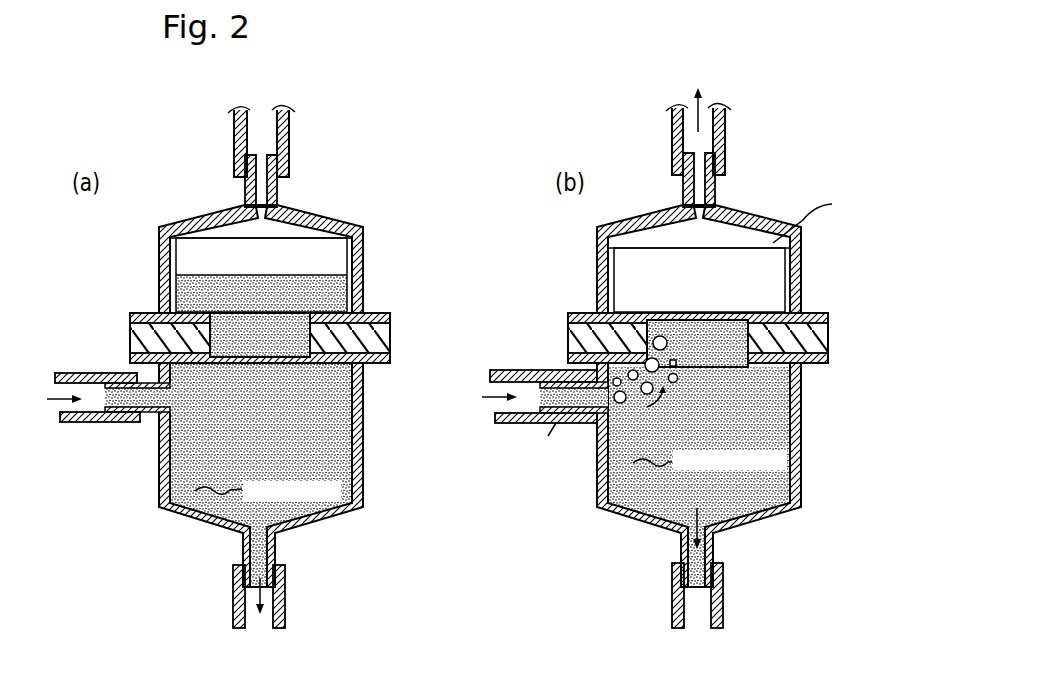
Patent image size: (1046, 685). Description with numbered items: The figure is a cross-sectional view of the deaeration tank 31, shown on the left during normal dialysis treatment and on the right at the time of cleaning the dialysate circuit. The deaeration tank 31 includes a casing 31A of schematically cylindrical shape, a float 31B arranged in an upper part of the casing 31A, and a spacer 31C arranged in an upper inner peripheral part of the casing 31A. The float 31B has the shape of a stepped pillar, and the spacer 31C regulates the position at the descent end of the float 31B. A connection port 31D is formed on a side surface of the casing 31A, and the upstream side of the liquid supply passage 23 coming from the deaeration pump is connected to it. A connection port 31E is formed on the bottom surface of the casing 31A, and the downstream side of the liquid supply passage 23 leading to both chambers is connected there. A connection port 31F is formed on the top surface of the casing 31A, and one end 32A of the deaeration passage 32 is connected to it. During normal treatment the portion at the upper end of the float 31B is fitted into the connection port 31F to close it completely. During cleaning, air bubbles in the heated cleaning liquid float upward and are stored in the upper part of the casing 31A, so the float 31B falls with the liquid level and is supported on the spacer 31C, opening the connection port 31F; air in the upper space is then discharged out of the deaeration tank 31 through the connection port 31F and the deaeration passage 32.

The deaeration tank 31 is at (380, 291).
The casing 31A is at (363, 450).
The float 31B is at (317, 263).
The spacer 31C is at (368, 342).
The connection port 31D is at (147, 413).
The connection port 31E is at (246, 550).
The connection port 31F is at (273, 186).
The deaeration passage 32 is at (290, 138).
The one end of the deaeration passage 32A is at (233, 164).
The liquid supply passage 23 is at (72, 371).